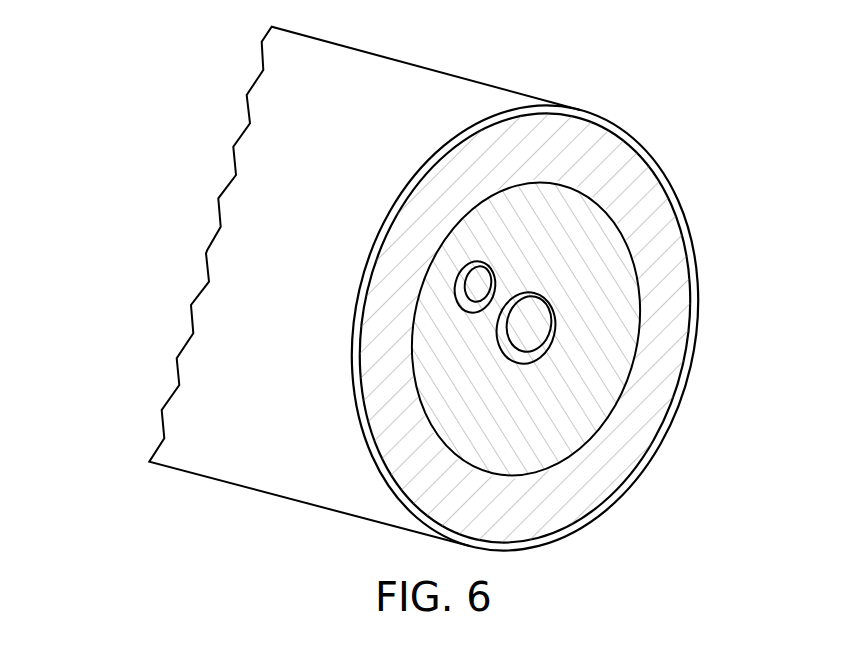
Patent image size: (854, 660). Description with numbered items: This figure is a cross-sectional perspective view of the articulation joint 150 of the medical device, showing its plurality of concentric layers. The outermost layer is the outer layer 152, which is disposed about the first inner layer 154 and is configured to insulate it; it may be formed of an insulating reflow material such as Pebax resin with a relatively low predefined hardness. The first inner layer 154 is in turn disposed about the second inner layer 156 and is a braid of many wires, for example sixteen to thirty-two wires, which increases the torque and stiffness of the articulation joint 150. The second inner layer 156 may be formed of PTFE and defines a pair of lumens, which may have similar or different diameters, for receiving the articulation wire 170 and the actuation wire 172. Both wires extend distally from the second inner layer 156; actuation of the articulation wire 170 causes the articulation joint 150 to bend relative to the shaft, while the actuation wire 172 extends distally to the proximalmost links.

The articulation joint 150 is at (146, 162).
The outer layer 152 is at (573, 112).
The first inner layer 154 is at (662, 223).
The second inner layer 156 is at (628, 318).
The articulation wire 170 is at (481, 281).
The actuation wire 172 is at (533, 340).